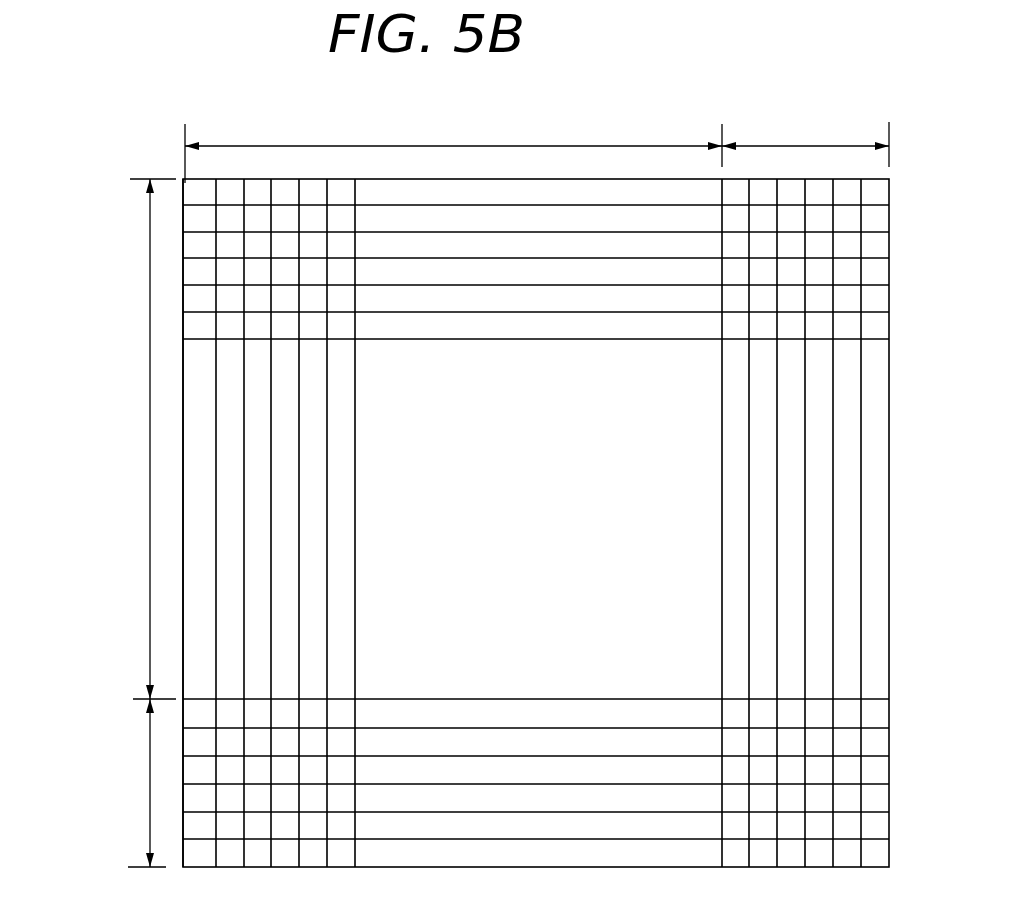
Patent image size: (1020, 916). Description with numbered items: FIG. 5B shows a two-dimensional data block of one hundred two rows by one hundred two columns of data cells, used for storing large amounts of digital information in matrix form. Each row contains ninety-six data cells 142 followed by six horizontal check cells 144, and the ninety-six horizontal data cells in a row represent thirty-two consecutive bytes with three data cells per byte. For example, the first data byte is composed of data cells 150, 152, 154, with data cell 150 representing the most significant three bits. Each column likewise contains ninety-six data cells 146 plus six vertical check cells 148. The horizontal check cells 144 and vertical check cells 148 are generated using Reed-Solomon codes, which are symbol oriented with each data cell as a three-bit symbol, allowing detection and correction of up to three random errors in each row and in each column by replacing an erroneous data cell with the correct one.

The data cells 142 is at (541, 108).
The horizontal check cells 144 is at (848, 72).
The data cells 146 is at (88, 372).
The vertical check cells 148 is at (72, 840).
The data cell 150 is at (190, 186).
The data cell 152 is at (224, 186).
The data cell 154 is at (256, 186).